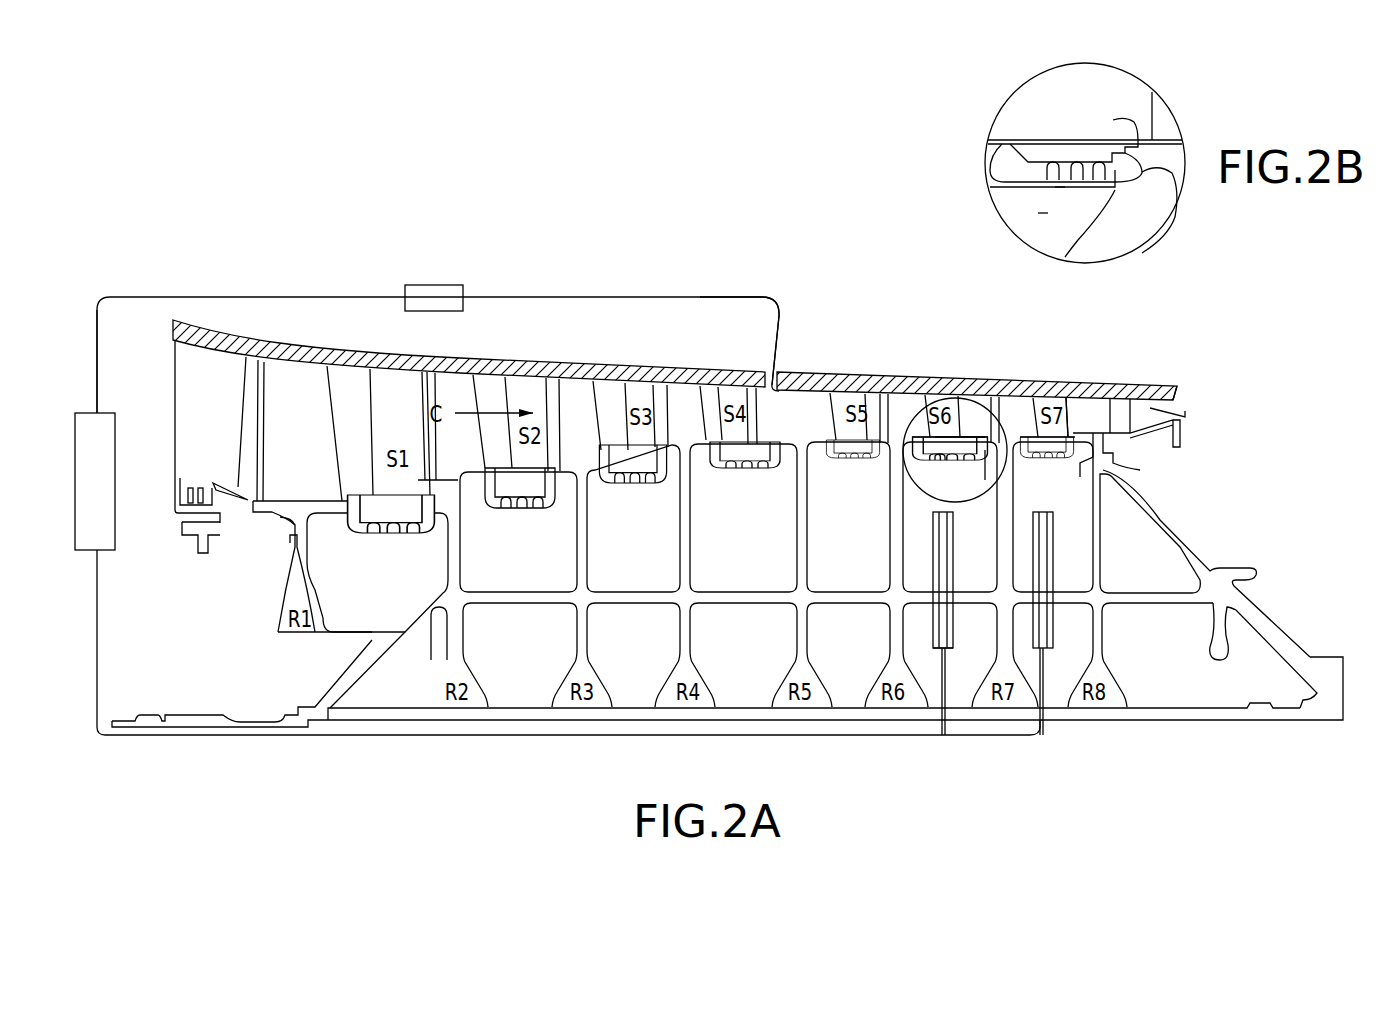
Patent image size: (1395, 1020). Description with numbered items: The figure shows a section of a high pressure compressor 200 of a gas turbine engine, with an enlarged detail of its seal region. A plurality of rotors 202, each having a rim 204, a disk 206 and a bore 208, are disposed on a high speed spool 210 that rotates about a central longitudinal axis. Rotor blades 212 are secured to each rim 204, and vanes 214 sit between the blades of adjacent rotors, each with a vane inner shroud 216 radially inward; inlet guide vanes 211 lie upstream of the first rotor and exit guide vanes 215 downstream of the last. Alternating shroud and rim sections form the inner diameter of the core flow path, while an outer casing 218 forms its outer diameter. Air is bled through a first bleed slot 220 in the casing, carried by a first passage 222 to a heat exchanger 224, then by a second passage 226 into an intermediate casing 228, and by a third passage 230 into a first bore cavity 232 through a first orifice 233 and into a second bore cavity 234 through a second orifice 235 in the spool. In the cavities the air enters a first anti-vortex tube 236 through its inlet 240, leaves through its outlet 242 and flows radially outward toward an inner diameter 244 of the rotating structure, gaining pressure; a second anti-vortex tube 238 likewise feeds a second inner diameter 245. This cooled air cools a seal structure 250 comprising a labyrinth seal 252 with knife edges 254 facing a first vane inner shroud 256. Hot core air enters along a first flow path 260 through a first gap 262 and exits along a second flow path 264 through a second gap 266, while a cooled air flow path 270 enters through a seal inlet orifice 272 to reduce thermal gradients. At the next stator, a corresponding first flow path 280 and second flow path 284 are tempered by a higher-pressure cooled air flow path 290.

In FIG. 2A, the high pressure compressor 200 is at (483, 173).
In FIG. 2A, the rotors 202 is at (672, 578).
In FIG. 2A, the rim 204 is at (691, 460).
In FIG. 2A, the disk 206 is at (689, 528).
In FIG. 2A, the bore 208 is at (695, 660).
In FIG. 2A, the high speed spool 210 is at (1313, 712).
In FIG. 2A, the inlet guide vanes 211 is at (197, 430).
In FIG. 2A, the rotor blades 212 is at (281, 444).
In FIG. 2A, the vanes 214 is at (380, 444).
In FIG. 2A, the exit guide vanes 215 is at (1162, 418).
In FIG. 2A, the vane inner shroud 216 is at (386, 516).
In FIG. 2A, the outer casing 218 is at (1175, 386).
In FIG. 2A, the first bleed slot 220 is at (782, 371).
In FIG. 2A, the first passage 222 is at (744, 297).
In FIG. 2A, the heat exchanger 224 is at (440, 285).
In FIG. 2A, the second passage 226 is at (331, 297).
In FIG. 2A, the intermediate casing 228 is at (99, 462).
In FIG. 2A, the third passage 230 is at (416, 737).
In FIG. 2A, the first bore cavity 232 is at (961, 699).
In FIG. 2A, the first orifice 233 is at (938, 715).
In FIG. 2A, the second bore cavity 234 is at (1066, 691).
In FIG. 2A, the second orifice 235 is at (1050, 712).
In FIG. 2A, the first anti-vortex tube 236 is at (958, 575).
In FIG. 2A, the second anti-vortex tube 238 is at (1056, 548).
In FIG. 2A, the inlet 240 is at (949, 648).
In FIG. 2A, the outlet 242 is at (928, 507).
In FIG. 2A, the inner diameter 244 is at (952, 460).
In FIG. 2B, the inner diameter 244 is at (1032, 187).
In FIG. 2A, the second inner diameter 245 is at (1127, 468).
In FIG. 2A, the seal structure 250 is at (966, 472).
In FIG. 2B, the seal structure 250 is at (1042, 214).
In FIG. 2B, the labyrinth seal 252 is at (1062, 187).
In FIG. 2B, the knife edges 254 is at (1074, 135).
In FIG. 2B, the first vane inner shroud 256 is at (1094, 160).
In FIG. 2A, the first flow path 260 is at (977, 423).
In FIG. 2B, the first flow path 260 is at (1113, 120).
In FIG. 2B, the first gap 262 is at (1143, 134).
In FIG. 2A, the second flow path 264 is at (913, 427).
In FIG. 2B, the second flow path 264 is at (1028, 121).
In FIG. 2B, the second gap 266 is at (993, 122).
In FIG. 2A, the cooled air flow path 270 is at (984, 472).
In FIG. 2B, the cooled air flow path 270 is at (1120, 190).
In FIG. 2B, the seal inlet orifice 272 is at (1150, 212).
In FIG. 2A, the first flow path 280 is at (1074, 428).
In FIG. 2A, the second flow path 284 is at (1030, 427).
In FIG. 2A, the cooled air flow path 290 is at (1100, 500).